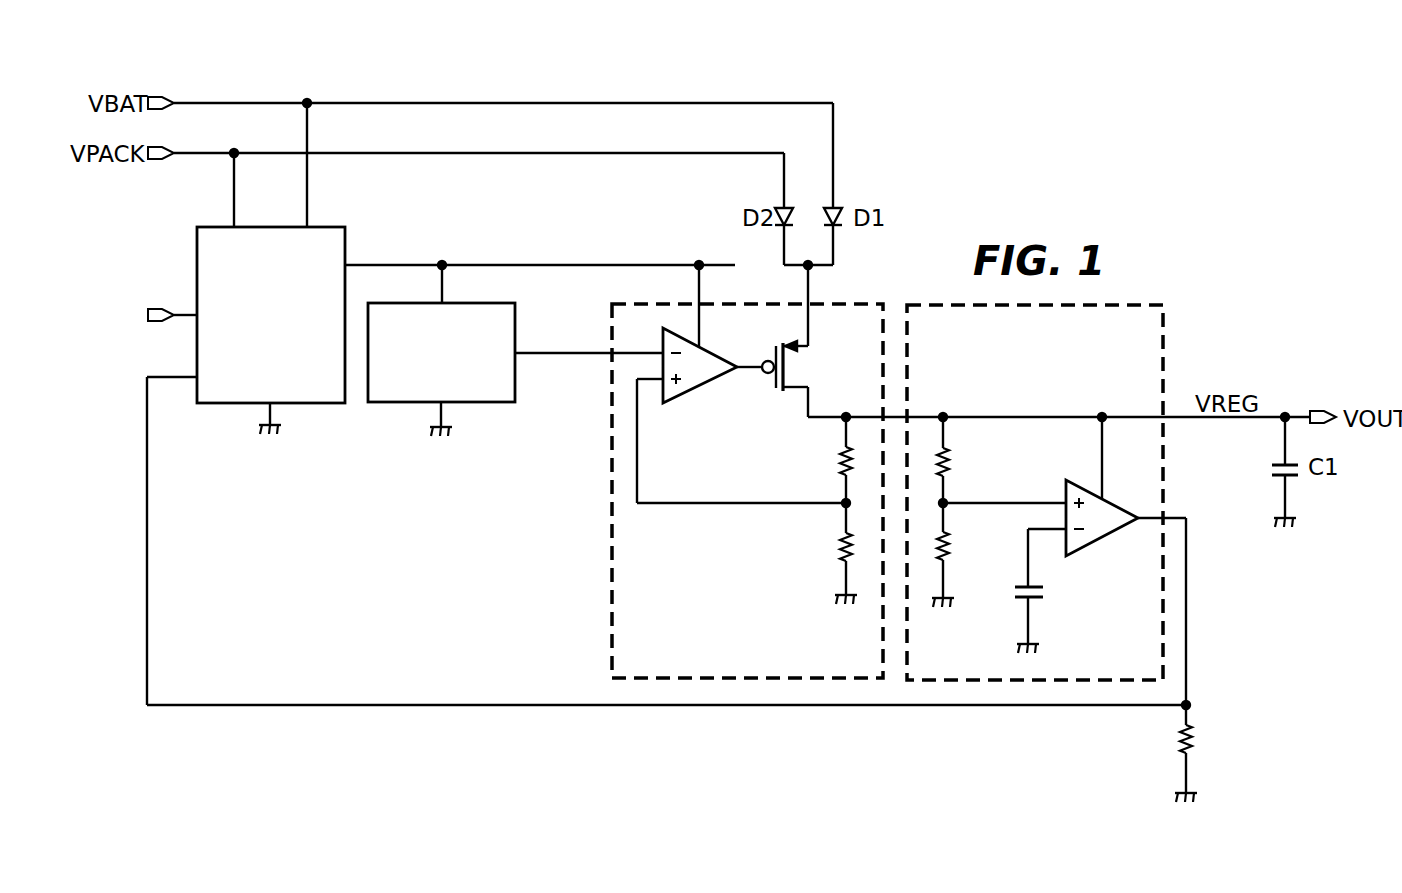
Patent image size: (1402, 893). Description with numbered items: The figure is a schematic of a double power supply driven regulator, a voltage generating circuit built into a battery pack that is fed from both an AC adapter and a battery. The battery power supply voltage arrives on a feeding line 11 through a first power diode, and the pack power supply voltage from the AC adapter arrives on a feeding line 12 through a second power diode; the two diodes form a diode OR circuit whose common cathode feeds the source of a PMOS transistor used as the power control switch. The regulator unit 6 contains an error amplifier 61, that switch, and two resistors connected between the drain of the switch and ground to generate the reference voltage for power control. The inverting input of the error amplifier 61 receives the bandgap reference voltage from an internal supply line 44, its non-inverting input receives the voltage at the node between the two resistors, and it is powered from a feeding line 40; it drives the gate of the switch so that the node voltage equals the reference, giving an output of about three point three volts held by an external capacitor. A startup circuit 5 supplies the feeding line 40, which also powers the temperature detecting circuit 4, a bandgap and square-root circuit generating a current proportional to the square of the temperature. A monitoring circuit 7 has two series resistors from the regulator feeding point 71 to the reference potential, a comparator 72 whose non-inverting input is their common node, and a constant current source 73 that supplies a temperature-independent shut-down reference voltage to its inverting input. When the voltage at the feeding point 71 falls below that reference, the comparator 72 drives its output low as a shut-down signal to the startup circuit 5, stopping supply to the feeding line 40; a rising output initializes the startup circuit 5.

The temperature detecting circuit 4 is at (403, 405).
The startup circuit 5 is at (197, 265).
The regulator unit 6 is at (750, 655).
The monitoring circuit 7 is at (1042, 358).
The feeding line 11 is at (515, 102).
The feeding line 12 is at (672, 155).
The feeding line 40 is at (405, 263).
The internal supply line 44 is at (575, 359).
The error amplifier 61 is at (697, 388).
The feeding point of the regulator unit 71 is at (945, 412).
The comparator 72 is at (1103, 537).
The constant current source 73 is at (1044, 592).